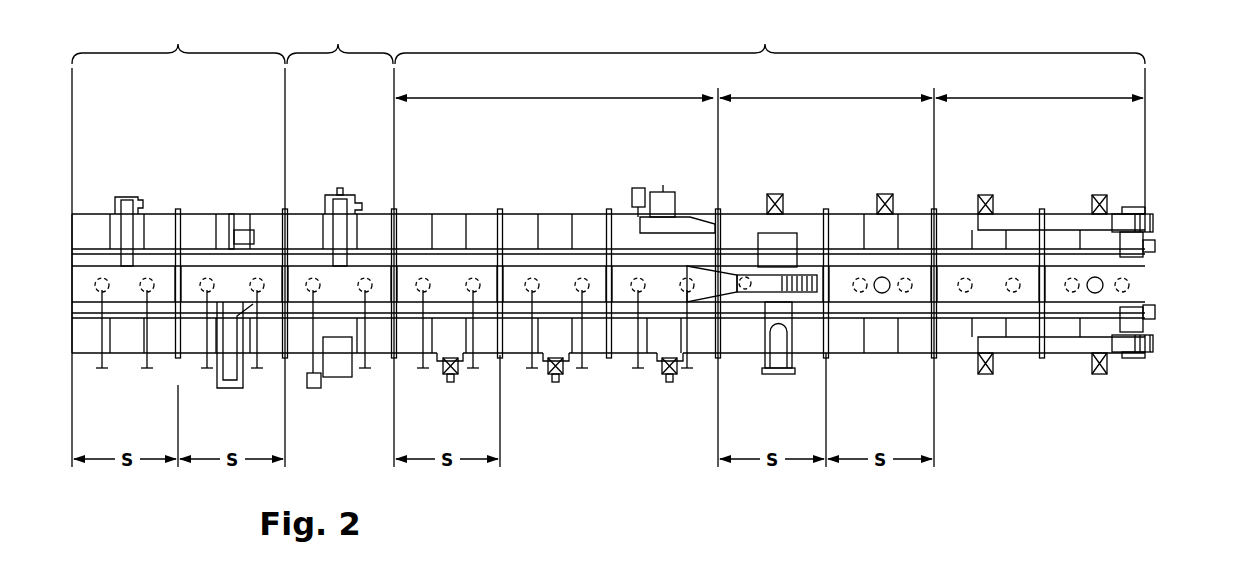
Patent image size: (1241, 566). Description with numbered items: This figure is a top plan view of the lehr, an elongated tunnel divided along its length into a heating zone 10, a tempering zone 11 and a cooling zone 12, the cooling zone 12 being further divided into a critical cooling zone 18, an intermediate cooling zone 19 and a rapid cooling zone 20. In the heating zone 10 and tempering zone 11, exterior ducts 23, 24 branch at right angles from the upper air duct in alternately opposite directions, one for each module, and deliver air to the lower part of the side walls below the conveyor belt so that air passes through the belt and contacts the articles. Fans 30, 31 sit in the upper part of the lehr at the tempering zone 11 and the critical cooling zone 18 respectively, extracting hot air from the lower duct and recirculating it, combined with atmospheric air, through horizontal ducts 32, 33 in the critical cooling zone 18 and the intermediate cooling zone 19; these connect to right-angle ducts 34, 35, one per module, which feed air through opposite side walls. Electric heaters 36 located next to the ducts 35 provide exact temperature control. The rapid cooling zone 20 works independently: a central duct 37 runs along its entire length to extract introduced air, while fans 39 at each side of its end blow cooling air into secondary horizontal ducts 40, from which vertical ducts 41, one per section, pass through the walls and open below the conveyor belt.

The heating zone 10 is at (178, 245).
The tempering zone 11 is at (339, 245).
The cooling zone 12 is at (769, 245).
The critical cooling zone 18 is at (557, 271).
The intermediate cooling zone 19 is at (827, 271).
The rapid cooling zone 20 is at (1039, 87).
The exterior duct 23 is at (132, 200).
The exterior duct 24 is at (230, 380).
The fan 30 is at (340, 345).
The fan 31 is at (683, 215).
The horizontal duct 32 is at (527, 362).
The horizontal duct 33 is at (810, 215).
The duct 34 is at (440, 376).
The duct 35 is at (347, 210).
The electric heater 36 is at (340, 200).
The central duct 37 is at (1137, 273).
The fan 39 is at (1150, 217).
The secondary horizontal duct 40 is at (1050, 214).
The vertical duct 41 is at (985, 195).